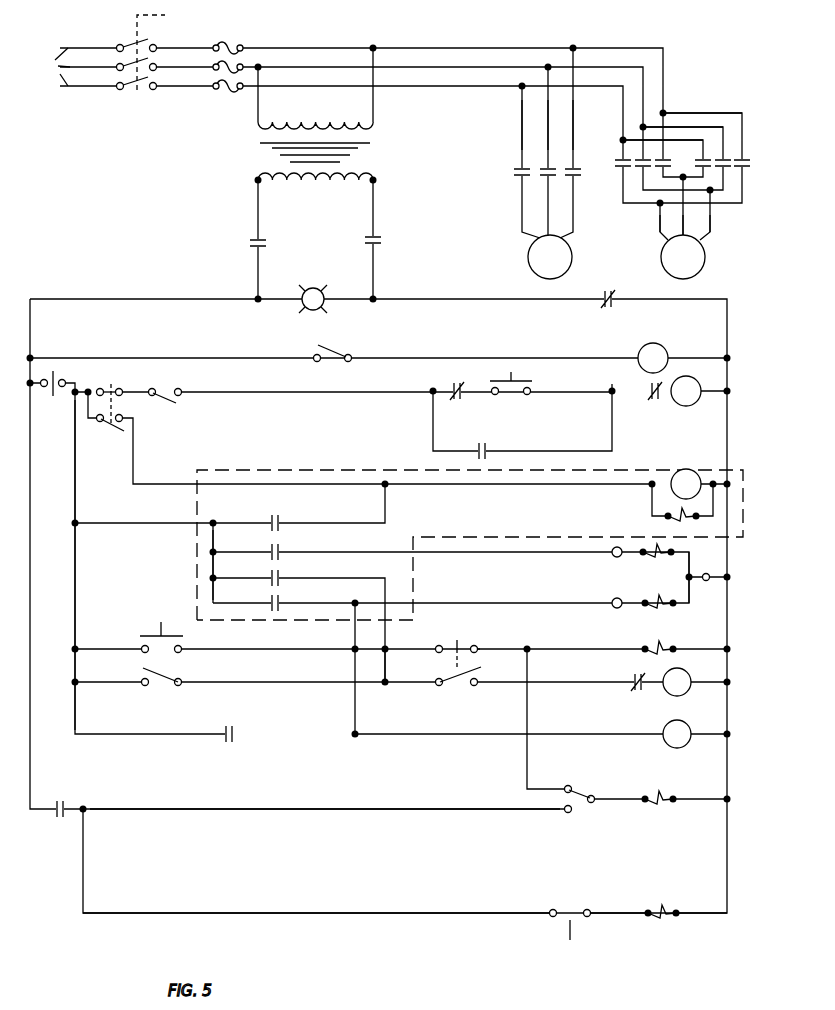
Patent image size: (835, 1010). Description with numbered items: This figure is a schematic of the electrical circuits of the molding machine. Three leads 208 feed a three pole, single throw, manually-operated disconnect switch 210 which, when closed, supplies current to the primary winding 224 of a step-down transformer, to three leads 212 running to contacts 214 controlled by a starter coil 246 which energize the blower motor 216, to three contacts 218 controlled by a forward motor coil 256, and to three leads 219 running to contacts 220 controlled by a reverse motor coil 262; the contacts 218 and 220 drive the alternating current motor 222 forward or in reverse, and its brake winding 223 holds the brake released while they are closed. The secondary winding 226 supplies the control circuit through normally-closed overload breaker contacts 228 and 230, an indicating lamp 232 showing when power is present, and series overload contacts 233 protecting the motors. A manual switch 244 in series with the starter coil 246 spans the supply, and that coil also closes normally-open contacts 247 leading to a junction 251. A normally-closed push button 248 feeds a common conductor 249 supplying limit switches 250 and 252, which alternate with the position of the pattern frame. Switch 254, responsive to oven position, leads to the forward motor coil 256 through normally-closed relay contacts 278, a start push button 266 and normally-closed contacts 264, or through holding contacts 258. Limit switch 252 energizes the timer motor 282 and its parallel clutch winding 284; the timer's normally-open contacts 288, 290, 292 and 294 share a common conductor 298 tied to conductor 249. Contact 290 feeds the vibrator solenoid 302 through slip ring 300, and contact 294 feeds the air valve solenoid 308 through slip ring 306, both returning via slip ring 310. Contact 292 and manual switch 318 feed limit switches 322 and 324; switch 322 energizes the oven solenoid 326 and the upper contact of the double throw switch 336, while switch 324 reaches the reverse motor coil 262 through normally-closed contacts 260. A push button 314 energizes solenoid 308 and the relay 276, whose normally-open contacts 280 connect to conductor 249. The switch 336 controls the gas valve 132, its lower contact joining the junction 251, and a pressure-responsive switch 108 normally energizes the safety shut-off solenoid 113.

The leads 208 is at (44, 67).
The disconnect switch 210 is at (150, 40).
The primary winding 224 is at (312, 122).
The secondary winding 226 is at (322, 182).
The normally-closed contact 228 is at (388, 233).
The normally-closed contact 230 is at (246, 245).
The indicating lamp 232 is at (319, 287).
The leads 212 is at (565, 138).
The contacts 214 is at (568, 178).
The alternating current motor 216 is at (528, 260).
The contacts 218 is at (640, 177).
The leads 219 is at (706, 126).
The contacts 220 is at (744, 172).
The alternating current motor 222 is at (706, 256).
The winding 223 is at (712, 226).
The normally-closed overload contacts 233 is at (600, 306).
The switch 244 is at (350, 355).
The starter coil 246 is at (662, 346).
The normally-closed push button 248 is at (54, 397).
The limit switch 250 is at (112, 390).
The limit switch 252 is at (113, 432).
The switch 254 is at (162, 405).
The forward motor coil 256 is at (682, 404).
The normally-open contacts 258 is at (478, 448).
The normally-closed contacts 264 is at (648, 389).
The normally-open push button 266 is at (530, 385).
The normally-closed contacts 278 is at (466, 400).
The timer motor 282 is at (698, 468).
The clutch winding 284 is at (660, 520).
The timer contacts 288 is at (282, 517).
The timer contacts 290 is at (283, 550).
The timer contacts 292 is at (283, 576).
The timer contacts 294 is at (283, 600).
The common conductor 298 is at (216, 562).
The common conductor 249 is at (78, 560).
The slip ring 300 is at (612, 560).
The slip ring 306 is at (614, 610).
The solenoid 308 is at (658, 598).
The solenoid 302 is at (673, 577).
The slip ring 310 is at (707, 583).
The normally-open push button 314 is at (142, 645).
The switch 318 is at (170, 676).
The limit switch 322 is at (460, 640).
The limit switch 324 is at (448, 688).
The solenoid 326 is at (670, 642).
The normally-closed contacts 260 is at (638, 678).
The reverse motor coil 262 is at (687, 696).
The relay 276 is at (683, 748).
The normally-open contacts 280 is at (237, 730).
The switch 336 is at (588, 792).
The solenoid-operated gas valve 132 is at (656, 815).
The normally-open contacts 247 is at (57, 822).
The junction 251 is at (89, 808).
The pressure-responsive switch 108 is at (556, 925).
The solenoid 113 is at (668, 925).